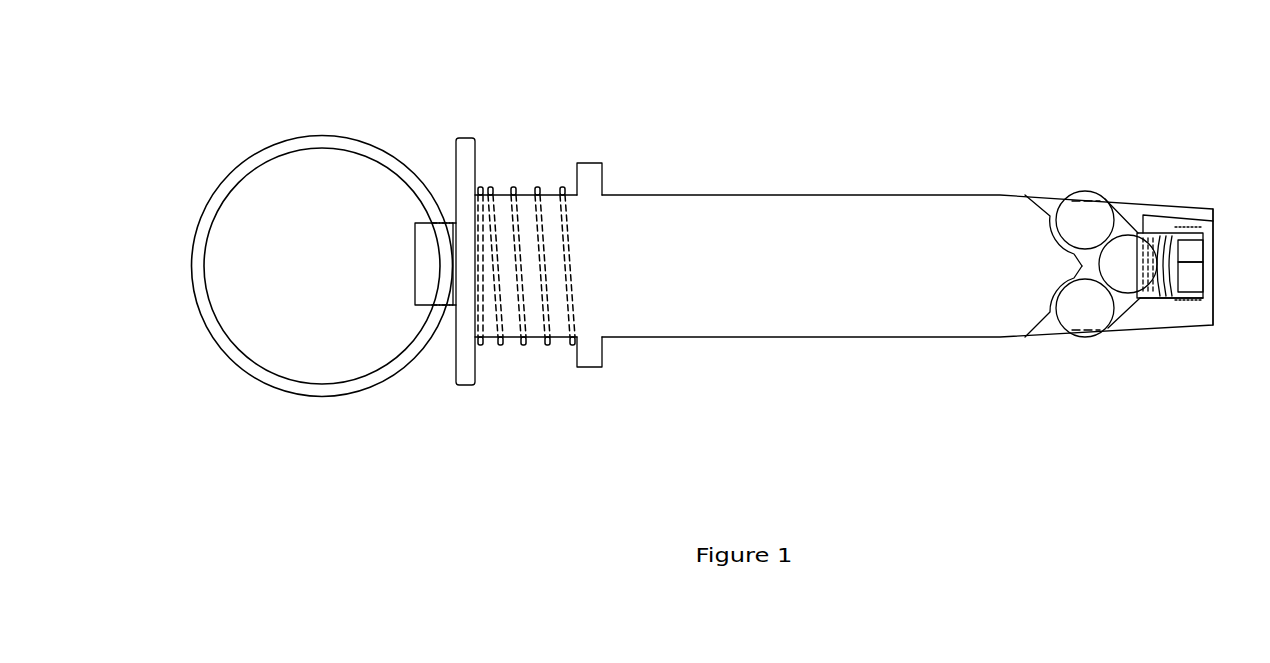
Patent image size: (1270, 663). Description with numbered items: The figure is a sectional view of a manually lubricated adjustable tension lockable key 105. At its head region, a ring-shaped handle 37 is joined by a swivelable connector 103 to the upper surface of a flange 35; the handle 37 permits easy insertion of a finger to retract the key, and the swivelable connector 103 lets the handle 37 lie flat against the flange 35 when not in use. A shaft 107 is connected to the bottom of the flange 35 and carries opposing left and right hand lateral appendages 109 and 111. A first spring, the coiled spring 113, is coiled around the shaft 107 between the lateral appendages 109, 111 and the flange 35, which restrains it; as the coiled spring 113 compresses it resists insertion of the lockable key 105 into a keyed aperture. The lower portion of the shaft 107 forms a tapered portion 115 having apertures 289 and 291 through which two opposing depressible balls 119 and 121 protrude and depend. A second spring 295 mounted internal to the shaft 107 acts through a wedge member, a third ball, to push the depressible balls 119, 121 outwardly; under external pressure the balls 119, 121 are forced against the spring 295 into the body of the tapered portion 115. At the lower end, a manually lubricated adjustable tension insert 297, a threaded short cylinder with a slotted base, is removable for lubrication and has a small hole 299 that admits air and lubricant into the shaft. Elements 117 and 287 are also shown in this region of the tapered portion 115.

The lockable key 105 is at (784, 100).
The handle 37 is at (330, 135).
The swivelable connector 103 is at (415, 262).
The flange 35 is at (466, 138).
The shaft 107 is at (698, 195).
The right hand lateral appendage 111 is at (585, 162).
The left hand lateral appendage 109 is at (582, 367).
The coiled spring 113 is at (512, 187).
The aperture 291 is at (1043, 216).
The aperture 289 is at (1043, 313).
The depressible ball 121 is at (1092, 192).
The depressible ball 119 is at (1082, 338).
The tapered portion 115 is at (1182, 208).
The end wall 117 is at (1213, 221).
The spring housing 287 is at (1143, 232).
The manually lubricated adjustable tension insert 297 is at (1205, 246).
The small hole 299 is at (1203, 263).
The spring 295 is at (1163, 303).